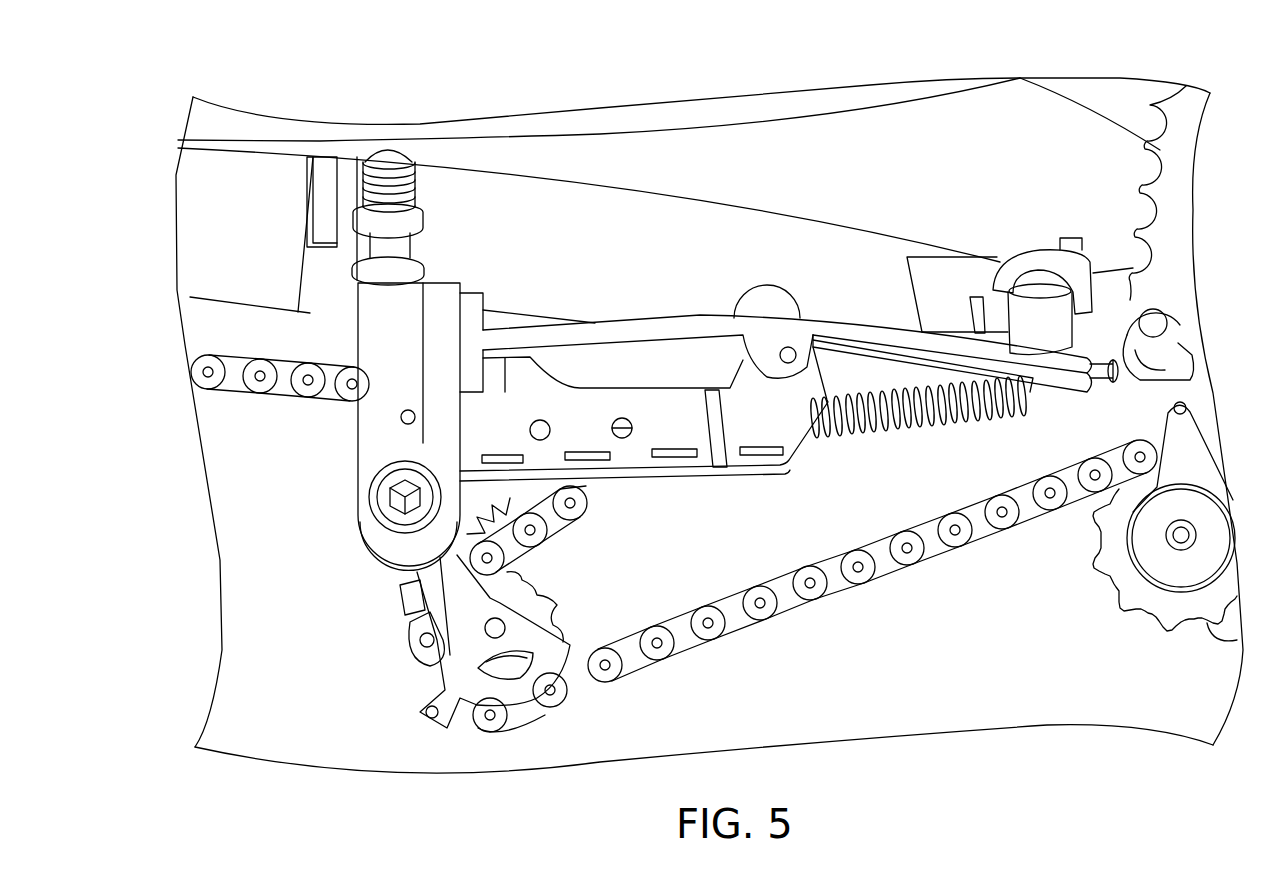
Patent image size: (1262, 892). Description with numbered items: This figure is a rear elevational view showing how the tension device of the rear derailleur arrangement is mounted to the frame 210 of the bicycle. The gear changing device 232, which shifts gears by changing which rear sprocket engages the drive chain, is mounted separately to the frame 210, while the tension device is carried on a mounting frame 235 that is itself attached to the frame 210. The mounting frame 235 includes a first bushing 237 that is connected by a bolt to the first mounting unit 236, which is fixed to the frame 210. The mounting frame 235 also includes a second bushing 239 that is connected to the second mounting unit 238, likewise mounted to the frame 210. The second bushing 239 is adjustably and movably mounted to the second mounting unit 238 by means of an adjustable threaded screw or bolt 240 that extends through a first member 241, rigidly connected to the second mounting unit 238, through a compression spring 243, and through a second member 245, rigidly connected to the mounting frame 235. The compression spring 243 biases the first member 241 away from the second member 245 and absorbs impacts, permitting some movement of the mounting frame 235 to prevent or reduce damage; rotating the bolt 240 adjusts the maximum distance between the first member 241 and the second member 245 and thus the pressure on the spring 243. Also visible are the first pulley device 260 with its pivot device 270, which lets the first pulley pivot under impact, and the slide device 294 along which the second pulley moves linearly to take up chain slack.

The frame 210 is at (810, 222).
The gear changing device 232 is at (1078, 622).
The mounting frame 235 is at (853, 320).
The first mounting unit 236 is at (1040, 257).
The first bushing 237 is at (1012, 310).
The second mounting unit 238 is at (337, 227).
The second bushing 239 is at (388, 182).
The threaded screw or bolt 240 is at (387, 147).
The first member 241 is at (424, 160).
The compression spring 243 is at (361, 187).
The second member 245 is at (360, 220).
The first pulley device 260 is at (408, 712).
The pivot device 270 is at (352, 538).
The slide device 294 is at (718, 486).